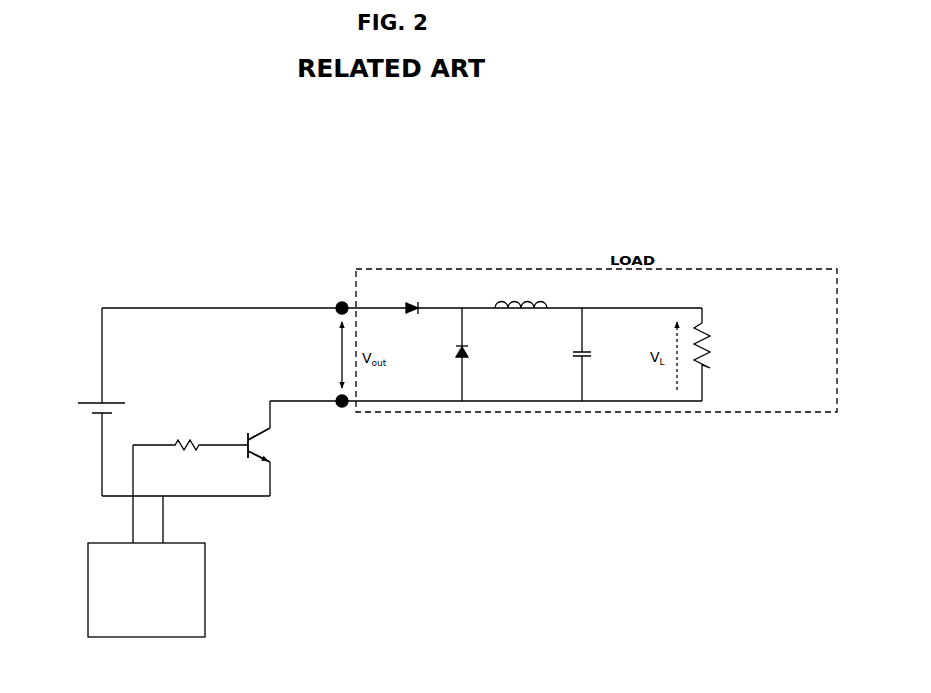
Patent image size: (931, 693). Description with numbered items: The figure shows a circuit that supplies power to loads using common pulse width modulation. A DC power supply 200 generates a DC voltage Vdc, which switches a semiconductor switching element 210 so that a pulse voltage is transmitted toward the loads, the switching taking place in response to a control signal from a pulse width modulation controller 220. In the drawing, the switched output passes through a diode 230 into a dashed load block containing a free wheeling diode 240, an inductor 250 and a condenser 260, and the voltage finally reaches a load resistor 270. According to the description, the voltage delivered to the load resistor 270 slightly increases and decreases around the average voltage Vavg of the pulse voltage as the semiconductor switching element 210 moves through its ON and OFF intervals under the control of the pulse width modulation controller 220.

The DC power supply 200 is at (50, 345).
The semiconductor switching element 210 is at (248, 408).
The pulse width modulation controller 220 is at (212, 590).
The diode 230 is at (407, 262).
The free wheeling diode 240 is at (452, 365).
The inductor 250 is at (517, 262).
The condenser 260 is at (572, 365).
The load resistor 270 is at (710, 318).